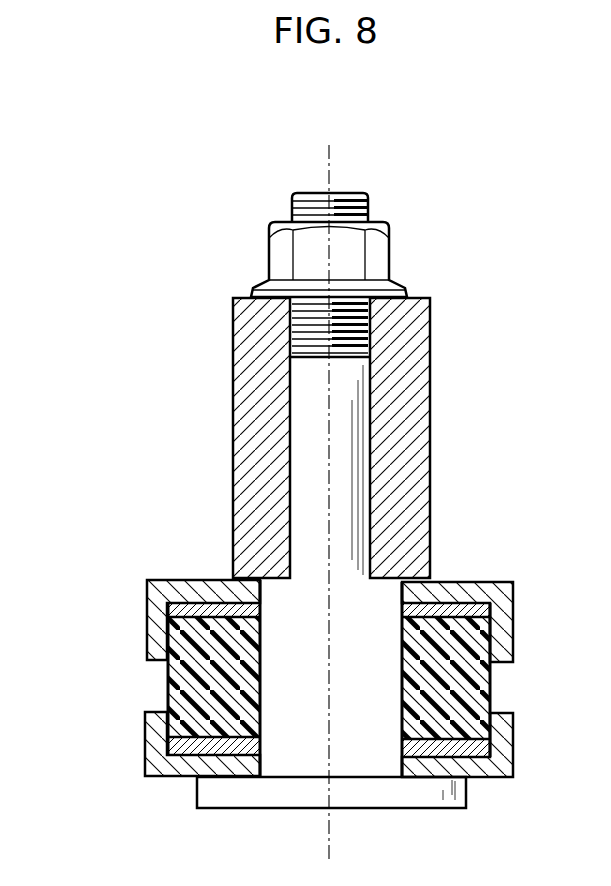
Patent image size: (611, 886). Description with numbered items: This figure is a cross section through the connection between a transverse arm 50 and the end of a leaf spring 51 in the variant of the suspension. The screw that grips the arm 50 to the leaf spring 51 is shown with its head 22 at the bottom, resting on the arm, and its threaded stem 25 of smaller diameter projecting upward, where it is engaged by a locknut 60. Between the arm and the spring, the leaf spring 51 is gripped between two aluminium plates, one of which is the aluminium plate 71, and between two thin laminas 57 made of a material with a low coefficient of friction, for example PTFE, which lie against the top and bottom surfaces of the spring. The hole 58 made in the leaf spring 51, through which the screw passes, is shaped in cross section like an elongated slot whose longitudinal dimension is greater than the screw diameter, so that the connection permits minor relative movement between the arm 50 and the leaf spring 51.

The threaded stem 25 is at (293, 195).
The locknut 60 is at (385, 252).
The transverse arm 50 is at (431, 404).
The aluminium plate 71 is at (497, 582).
The leaf spring 51 is at (166, 677).
The thin lamina 57 is at (170, 612).
The hole in the leaf spring 58 is at (270, 716).
The head 22 is at (383, 795).